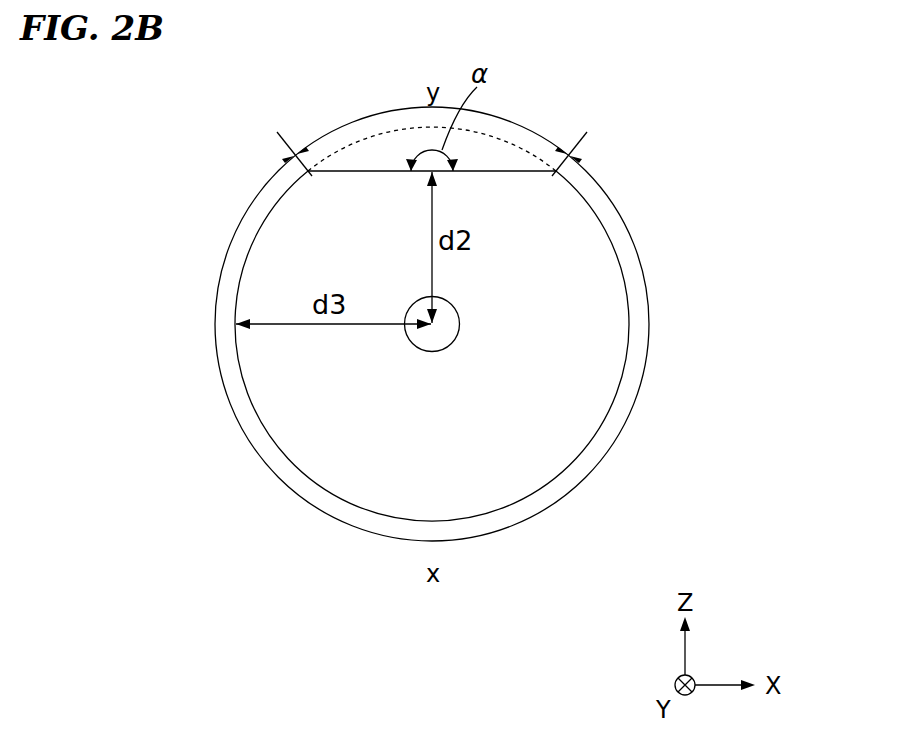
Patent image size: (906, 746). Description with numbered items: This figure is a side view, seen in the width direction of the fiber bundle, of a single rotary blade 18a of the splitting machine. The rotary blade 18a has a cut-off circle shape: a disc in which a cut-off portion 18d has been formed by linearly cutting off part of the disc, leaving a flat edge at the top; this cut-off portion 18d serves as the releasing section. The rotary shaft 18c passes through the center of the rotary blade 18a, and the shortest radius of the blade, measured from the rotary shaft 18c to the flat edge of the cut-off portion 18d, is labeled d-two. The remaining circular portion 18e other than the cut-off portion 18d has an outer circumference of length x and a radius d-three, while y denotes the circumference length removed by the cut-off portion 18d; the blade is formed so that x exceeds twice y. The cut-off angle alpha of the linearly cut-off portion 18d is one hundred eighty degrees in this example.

The rotary blade 18a is at (590, 442).
The rotary shaft 18c is at (457, 338).
The cut-off portion 18d is at (368, 168).
The portion other than the cut-off portion 18e is at (290, 462).